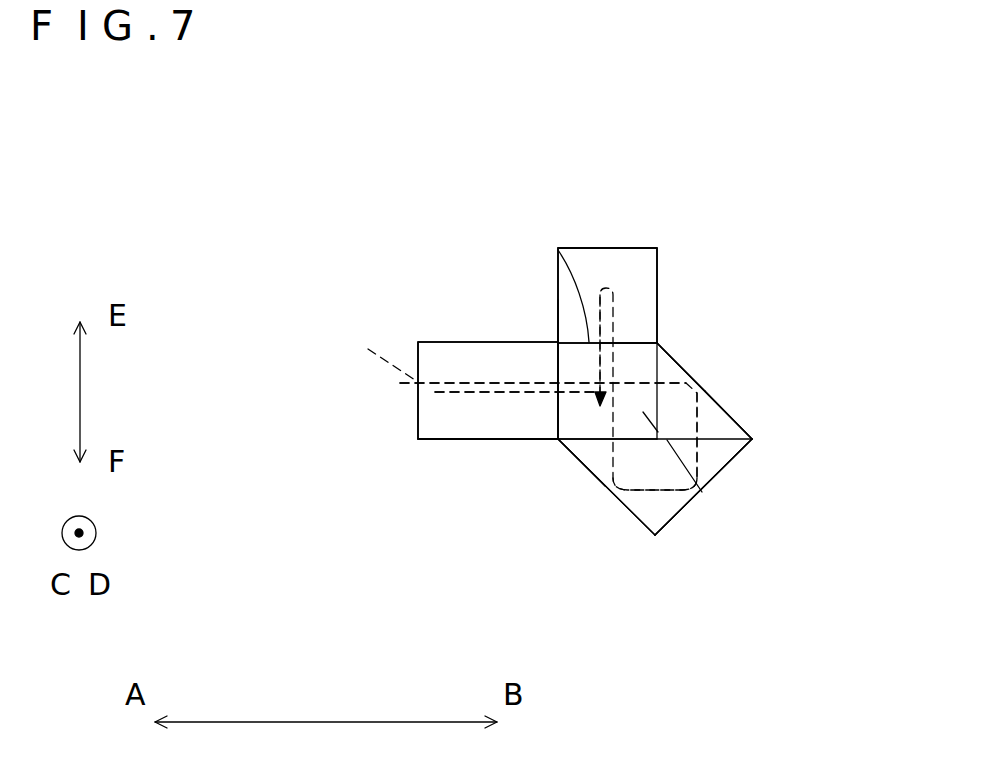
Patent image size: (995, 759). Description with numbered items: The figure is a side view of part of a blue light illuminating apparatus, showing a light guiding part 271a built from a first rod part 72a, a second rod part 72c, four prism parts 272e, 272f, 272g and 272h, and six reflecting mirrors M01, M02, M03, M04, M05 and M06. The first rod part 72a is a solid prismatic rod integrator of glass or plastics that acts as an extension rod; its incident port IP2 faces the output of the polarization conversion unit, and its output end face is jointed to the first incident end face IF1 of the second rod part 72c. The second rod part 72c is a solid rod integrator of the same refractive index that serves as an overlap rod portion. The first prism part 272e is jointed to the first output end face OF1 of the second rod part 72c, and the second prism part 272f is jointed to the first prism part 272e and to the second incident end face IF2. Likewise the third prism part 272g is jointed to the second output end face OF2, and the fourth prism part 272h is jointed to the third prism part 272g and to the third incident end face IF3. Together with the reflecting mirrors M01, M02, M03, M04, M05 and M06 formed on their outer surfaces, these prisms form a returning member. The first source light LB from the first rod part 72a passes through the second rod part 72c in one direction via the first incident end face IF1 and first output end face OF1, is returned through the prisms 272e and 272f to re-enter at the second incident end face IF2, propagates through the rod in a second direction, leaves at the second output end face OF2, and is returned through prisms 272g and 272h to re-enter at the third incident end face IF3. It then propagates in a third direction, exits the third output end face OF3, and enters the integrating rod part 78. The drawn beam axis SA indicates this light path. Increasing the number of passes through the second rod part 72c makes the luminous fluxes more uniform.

The first rod part 72a is at (432, 343).
The first source light LB is at (415, 380).
The incident port IP2 is at (418, 413).
The sub-beam / optical axis SA is at (459, 394).
The third incident end face IF3 is at (552, 446).
The second incident end face IF2 is at (576, 452).
The reflecting mirror M06 is at (603, 430).
The reflecting mirror M03 is at (631, 514).
The second prism part 272f is at (663, 505).
The second rod part 72c is at (702, 491).
The reflecting mirror M02 is at (730, 471).
The first prism part 272e is at (699, 424).
The reflecting mirror M01 is at (720, 405).
The first output end face OF1 is at (672, 377).
The integrating rod part 78 is at (658, 383).
The third output end face OF3 is at (657, 343).
The reflecting mirror M04 is at (657, 300).
The light guiding part 271a is at (646, 236).
The reflecting mirror M05 is at (603, 275).
The second output end face OF2 is at (551, 248).
The third prism part 272g is at (567, 307).
The fourth prism part 272h is at (575, 358).
The first incident end face IF1 is at (552, 377).